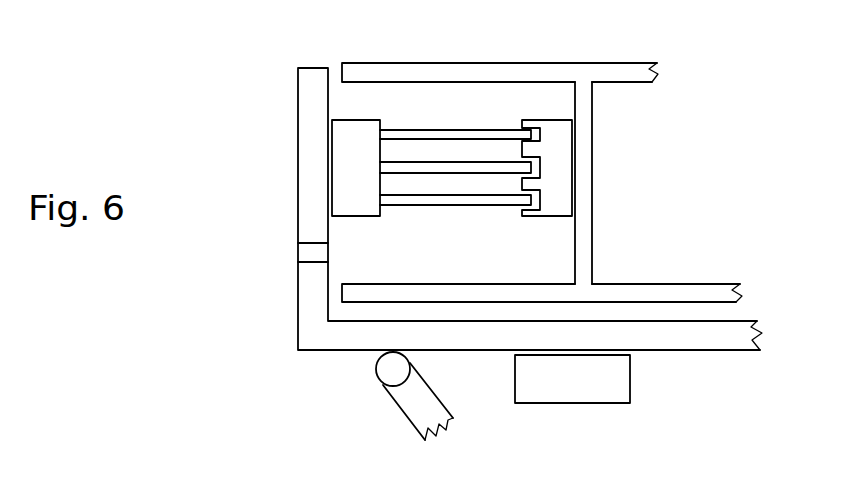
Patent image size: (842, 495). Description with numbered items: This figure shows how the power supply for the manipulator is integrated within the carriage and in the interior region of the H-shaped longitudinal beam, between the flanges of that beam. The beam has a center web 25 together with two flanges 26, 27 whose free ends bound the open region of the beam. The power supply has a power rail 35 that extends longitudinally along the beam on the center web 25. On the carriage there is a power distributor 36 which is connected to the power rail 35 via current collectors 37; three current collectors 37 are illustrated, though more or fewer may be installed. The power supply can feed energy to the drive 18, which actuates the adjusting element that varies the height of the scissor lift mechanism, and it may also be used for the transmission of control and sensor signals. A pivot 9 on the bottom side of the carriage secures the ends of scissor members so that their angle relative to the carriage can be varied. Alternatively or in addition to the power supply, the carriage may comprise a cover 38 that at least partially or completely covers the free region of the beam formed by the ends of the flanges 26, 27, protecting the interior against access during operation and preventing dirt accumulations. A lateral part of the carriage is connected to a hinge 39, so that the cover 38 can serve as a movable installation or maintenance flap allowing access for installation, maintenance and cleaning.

The pivot 9 is at (390, 375).
The drive 18 is at (587, 388).
The center web 25 is at (585, 218).
The flange 26 is at (492, 76).
The flange 27 is at (716, 290).
The power rail 35 is at (558, 147).
The power distributor 36 is at (373, 178).
The current collector 37 is at (413, 135).
The cover 38 is at (303, 138).
The hinge 39 is at (310, 250).